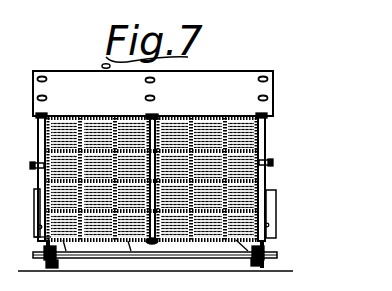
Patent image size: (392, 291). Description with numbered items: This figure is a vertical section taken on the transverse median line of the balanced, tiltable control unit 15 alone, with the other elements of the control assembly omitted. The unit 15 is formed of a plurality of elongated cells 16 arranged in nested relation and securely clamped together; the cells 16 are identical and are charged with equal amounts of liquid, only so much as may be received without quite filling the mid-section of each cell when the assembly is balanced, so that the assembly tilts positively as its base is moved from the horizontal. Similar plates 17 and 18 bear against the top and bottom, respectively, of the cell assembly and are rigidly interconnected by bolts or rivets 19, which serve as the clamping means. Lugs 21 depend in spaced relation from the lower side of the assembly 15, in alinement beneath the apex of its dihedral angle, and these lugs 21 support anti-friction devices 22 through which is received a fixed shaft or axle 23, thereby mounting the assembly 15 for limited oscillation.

The balanced, tiltable control unit 15 is at (199, 83).
The elongated cells 16 is at (231, 117).
The top clamp plate 17 is at (153, 93).
The bottom clamp plate 18 is at (27, 206).
The bolts or rivets 19 is at (145, 105).
The lugs 21 is at (37, 239).
The anti-friction devices 22 is at (50, 258).
The fixed shaft or axle 23 is at (141, 249).